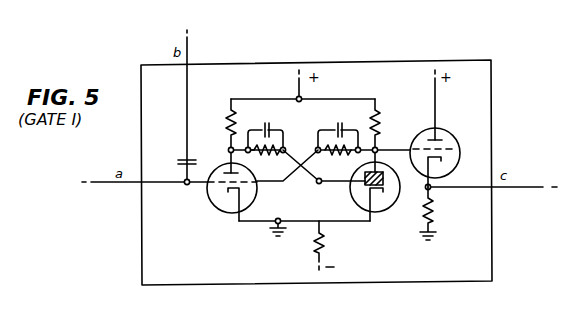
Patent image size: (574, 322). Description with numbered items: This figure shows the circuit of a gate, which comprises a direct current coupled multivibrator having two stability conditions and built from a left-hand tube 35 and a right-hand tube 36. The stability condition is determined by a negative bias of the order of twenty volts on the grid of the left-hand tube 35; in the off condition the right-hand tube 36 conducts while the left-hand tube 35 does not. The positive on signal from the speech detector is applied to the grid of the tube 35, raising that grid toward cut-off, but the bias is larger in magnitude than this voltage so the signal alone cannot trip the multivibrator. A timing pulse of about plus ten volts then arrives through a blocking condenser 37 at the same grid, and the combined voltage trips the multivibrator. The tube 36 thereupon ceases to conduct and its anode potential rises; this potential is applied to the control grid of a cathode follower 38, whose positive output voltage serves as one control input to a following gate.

The left-hand tube 35 is at (217, 209).
The right-hand tube 36 is at (378, 209).
The blocking condenser 37 is at (181, 160).
The cathode follower 38 is at (450, 134).